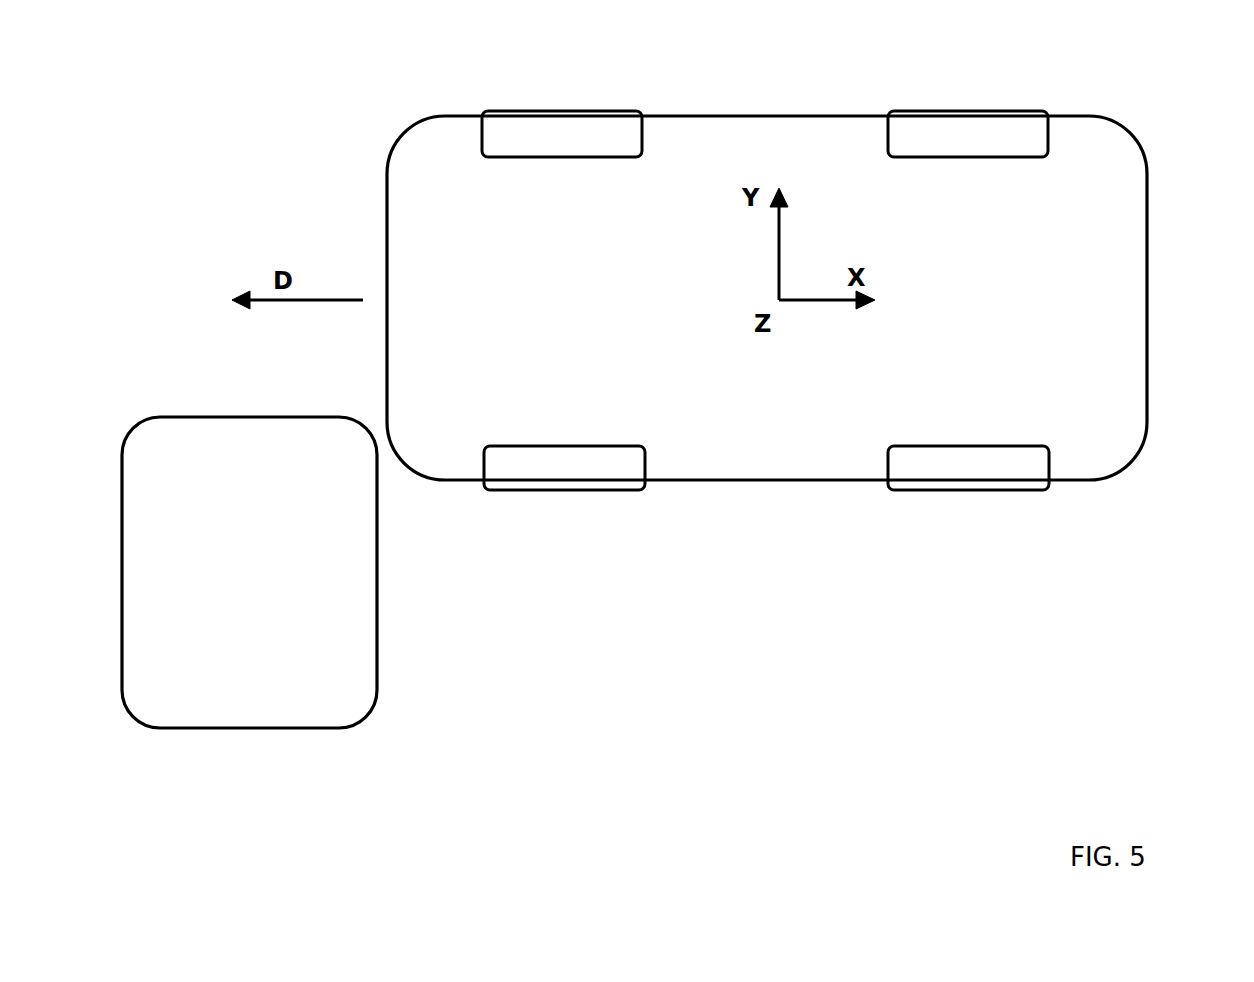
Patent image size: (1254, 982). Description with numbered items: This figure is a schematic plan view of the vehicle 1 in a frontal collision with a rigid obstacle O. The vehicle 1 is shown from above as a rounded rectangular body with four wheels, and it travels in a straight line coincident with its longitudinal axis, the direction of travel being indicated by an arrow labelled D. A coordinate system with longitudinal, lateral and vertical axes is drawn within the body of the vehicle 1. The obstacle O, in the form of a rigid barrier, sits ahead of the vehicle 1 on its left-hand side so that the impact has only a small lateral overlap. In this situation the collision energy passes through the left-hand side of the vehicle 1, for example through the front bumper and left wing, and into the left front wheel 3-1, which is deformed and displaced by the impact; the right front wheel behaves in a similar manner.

The vehicle 1 is at (1112, 90).
The left front wheel 3-1 is at (570, 489).
The obstacle O is at (345, 680).